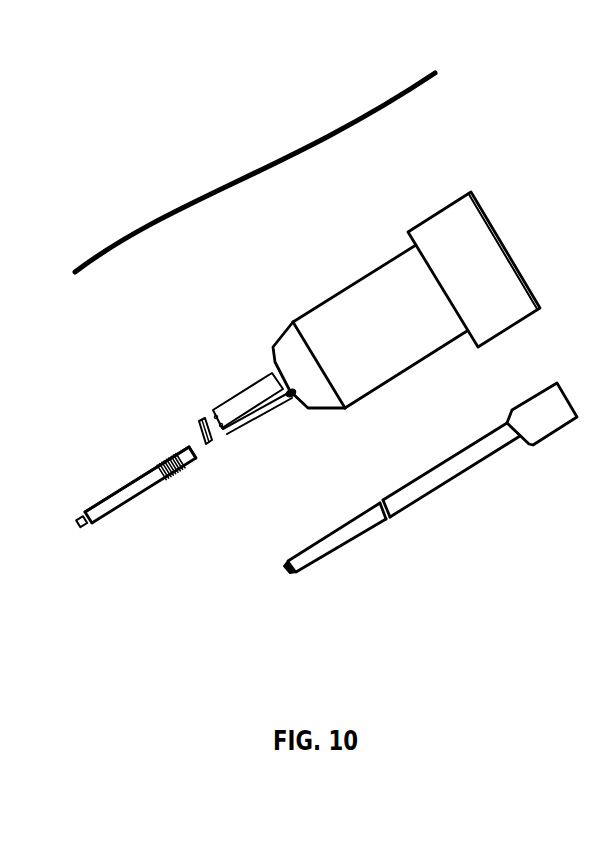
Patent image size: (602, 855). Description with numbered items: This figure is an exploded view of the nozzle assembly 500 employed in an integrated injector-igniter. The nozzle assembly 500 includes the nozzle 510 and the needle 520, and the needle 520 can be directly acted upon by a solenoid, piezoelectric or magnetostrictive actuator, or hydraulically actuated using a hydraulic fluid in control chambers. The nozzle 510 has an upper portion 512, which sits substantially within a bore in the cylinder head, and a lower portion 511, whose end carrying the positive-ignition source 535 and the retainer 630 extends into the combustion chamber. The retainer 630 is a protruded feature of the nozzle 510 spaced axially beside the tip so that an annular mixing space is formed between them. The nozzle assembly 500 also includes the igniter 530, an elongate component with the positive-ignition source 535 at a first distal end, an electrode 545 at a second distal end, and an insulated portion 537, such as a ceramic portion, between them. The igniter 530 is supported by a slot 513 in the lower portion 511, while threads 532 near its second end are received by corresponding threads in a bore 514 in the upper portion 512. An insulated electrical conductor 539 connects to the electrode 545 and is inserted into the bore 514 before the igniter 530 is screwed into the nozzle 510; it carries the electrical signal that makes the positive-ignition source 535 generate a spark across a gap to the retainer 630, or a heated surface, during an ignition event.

The nozzle assembly 500 is at (118, 158).
The insulated electrical conductor 539 is at (222, 201).
The nozzle 510 is at (328, 298).
The upper portion 512 is at (376, 268).
The lower portion 511 is at (240, 394).
The retainer 630 is at (200, 418).
The slot 513 is at (274, 406).
The bore 514 is at (293, 402).
The igniter 530 is at (132, 507).
The insulated portion 537 is at (117, 492).
The positive-ignition source 535 is at (78, 528).
The electrode 545 is at (193, 461).
The threads 532 is at (173, 476).
The needle 520 is at (437, 489).